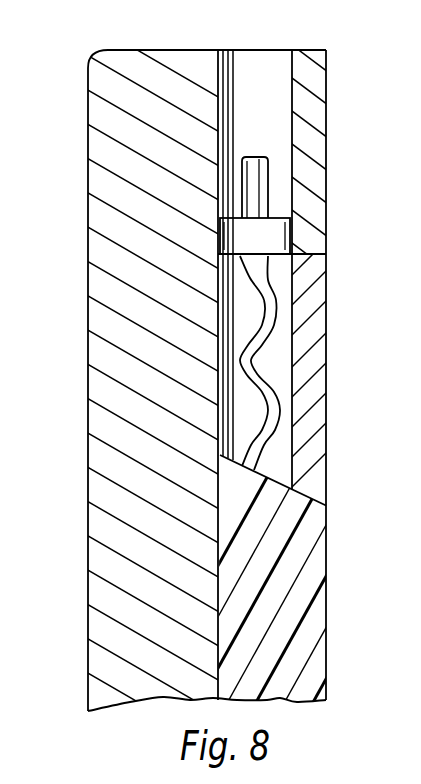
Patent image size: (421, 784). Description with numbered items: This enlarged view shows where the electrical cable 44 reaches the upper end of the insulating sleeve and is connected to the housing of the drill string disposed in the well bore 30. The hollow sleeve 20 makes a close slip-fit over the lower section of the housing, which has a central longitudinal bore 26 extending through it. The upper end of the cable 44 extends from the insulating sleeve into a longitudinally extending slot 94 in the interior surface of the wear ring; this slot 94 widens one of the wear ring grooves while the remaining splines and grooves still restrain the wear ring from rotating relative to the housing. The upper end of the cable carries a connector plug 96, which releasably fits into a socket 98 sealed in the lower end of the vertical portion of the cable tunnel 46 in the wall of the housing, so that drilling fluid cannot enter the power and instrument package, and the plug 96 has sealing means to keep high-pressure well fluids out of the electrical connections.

The sleeve 20 is at (302, 562).
The central longitudinal bore 26 is at (86, 397).
The well bore 30 is at (314, 338).
The cable 44 is at (245, 406).
The cable tunnel 46 is at (292, 100).
The slot 94 is at (283, 377).
The connector plug 96 is at (240, 266).
The socket 98 is at (220, 210).